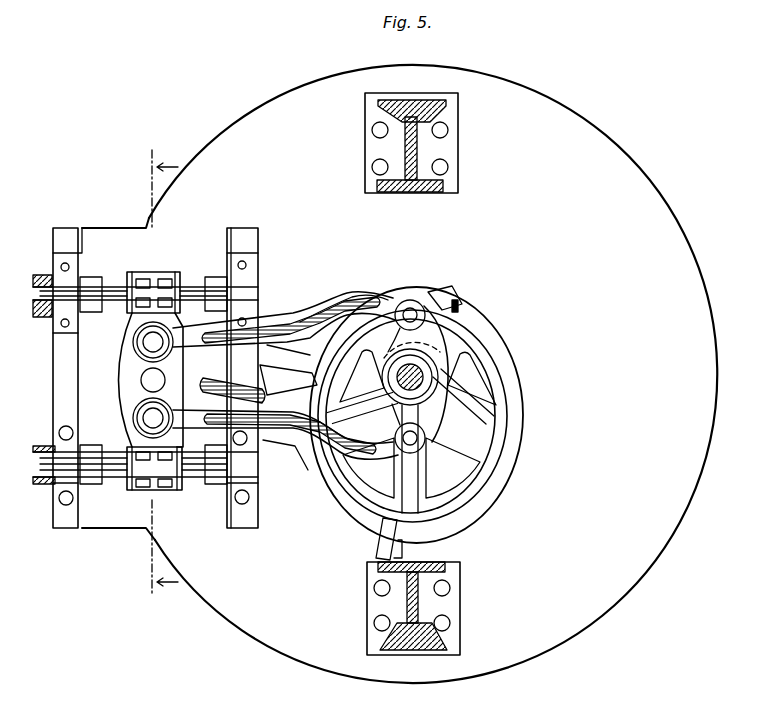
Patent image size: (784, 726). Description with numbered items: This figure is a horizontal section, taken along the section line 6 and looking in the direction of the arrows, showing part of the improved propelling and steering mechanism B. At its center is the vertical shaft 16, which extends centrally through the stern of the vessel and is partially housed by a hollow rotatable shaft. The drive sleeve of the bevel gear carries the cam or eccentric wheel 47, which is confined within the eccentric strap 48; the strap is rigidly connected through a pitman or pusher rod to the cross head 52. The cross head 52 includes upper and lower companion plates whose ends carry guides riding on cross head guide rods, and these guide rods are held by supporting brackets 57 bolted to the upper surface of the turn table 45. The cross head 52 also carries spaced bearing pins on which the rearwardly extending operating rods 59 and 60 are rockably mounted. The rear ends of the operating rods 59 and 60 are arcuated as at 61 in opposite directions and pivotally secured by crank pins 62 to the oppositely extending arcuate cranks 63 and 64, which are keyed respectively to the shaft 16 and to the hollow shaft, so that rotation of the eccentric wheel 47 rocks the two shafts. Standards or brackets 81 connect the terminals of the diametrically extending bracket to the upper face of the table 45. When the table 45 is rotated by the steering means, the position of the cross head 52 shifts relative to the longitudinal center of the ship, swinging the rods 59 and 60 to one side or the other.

The vertical shaft 16 is at (423, 375).
The turn table 45 is at (619, 600).
The cam or eccentric wheel 47 is at (488, 425).
The eccentric strap 48 is at (512, 392).
The cross head 52 is at (170, 300).
The supporting brackets 57 is at (243, 524).
The operating rod 59 is at (282, 326).
The operating rod 60 is at (287, 412).
The arcuated rear ends 61 is at (360, 294).
The crank pins 62 is at (412, 312).
The arcuate crank 63 is at (435, 430).
The arcuate crank 64 is at (452, 306).
The standards or brackets 81 is at (415, 193).
The propelling and steering mechanism B is at (437, 348).
The section line 6- 6 is at (165, 379).